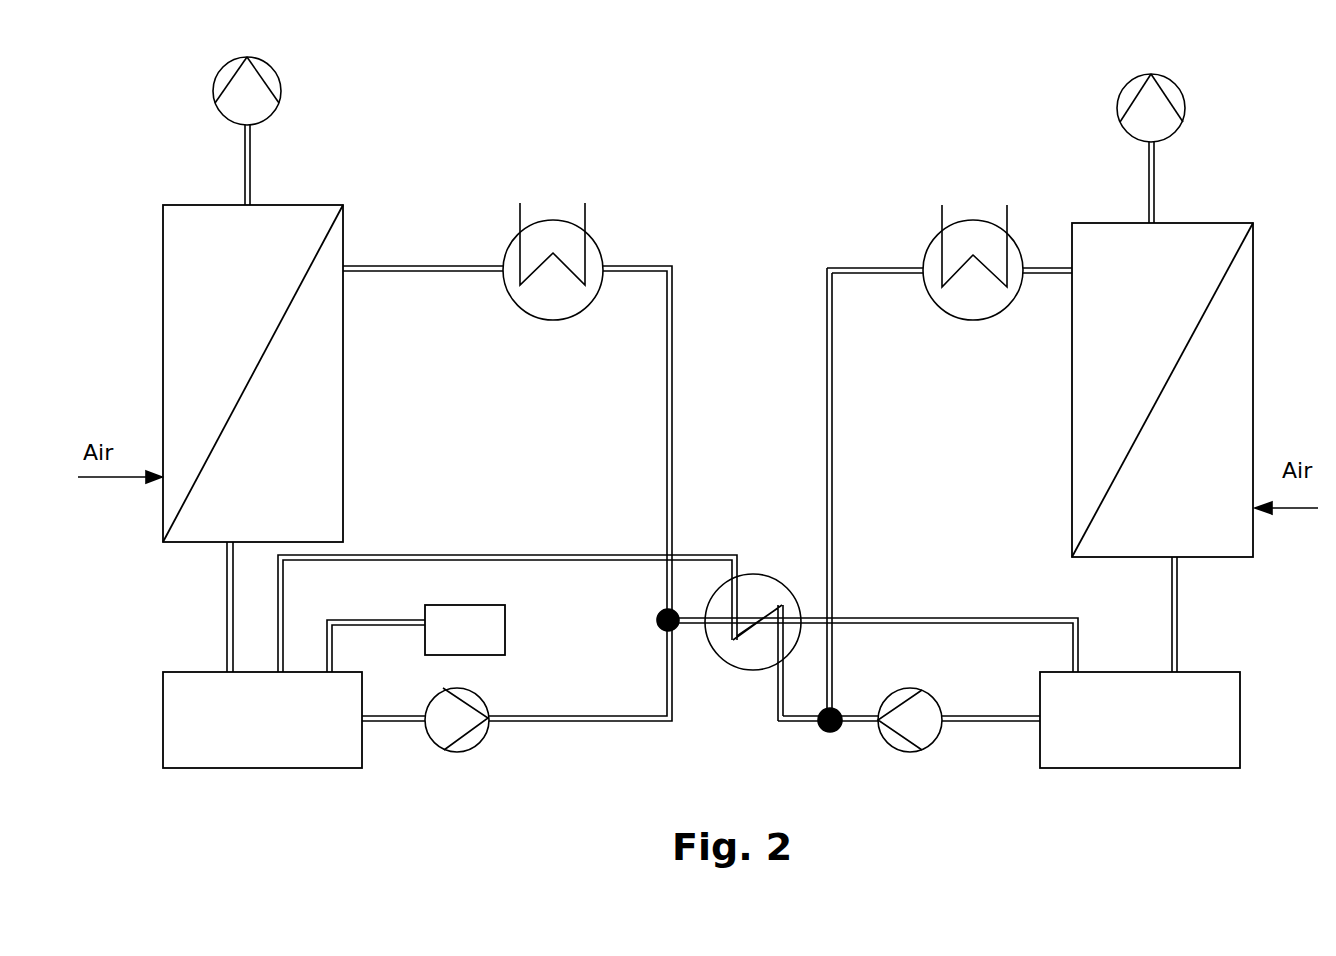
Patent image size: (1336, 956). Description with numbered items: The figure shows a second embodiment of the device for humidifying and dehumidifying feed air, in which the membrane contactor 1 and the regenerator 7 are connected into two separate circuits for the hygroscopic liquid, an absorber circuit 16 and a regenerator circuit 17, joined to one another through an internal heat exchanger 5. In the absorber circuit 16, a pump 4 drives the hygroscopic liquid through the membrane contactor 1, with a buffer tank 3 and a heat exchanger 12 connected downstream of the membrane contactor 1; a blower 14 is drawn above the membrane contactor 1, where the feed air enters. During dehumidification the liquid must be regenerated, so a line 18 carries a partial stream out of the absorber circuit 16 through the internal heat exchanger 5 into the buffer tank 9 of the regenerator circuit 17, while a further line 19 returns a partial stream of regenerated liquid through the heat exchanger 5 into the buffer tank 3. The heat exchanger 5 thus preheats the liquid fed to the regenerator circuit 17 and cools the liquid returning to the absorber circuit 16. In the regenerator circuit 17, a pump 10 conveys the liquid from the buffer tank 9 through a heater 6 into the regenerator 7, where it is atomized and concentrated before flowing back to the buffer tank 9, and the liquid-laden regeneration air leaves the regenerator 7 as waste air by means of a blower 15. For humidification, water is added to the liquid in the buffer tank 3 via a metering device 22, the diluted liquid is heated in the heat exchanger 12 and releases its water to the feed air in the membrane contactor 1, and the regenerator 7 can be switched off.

The membrane contactor 1 is at (229, 310).
The buffer tank 3 is at (262, 720).
The pump 4 is at (457, 752).
The internal heat exchanger 5 is at (765, 577).
The heater 6 is at (927, 255).
The regenerator 7 is at (1137, 310).
The buffer tank 9 is at (1140, 720).
The pump 10 is at (928, 733).
The heat exchanger 12 is at (517, 302).
The fan 14 is at (283, 103).
The blower 15 is at (1183, 122).
The absorber circuit 16 is at (489, 452).
The regenerator circuit 17 is at (972, 422).
The line 18 is at (477, 555).
The further line 19 is at (900, 618).
The metering device 22 is at (416, 638).